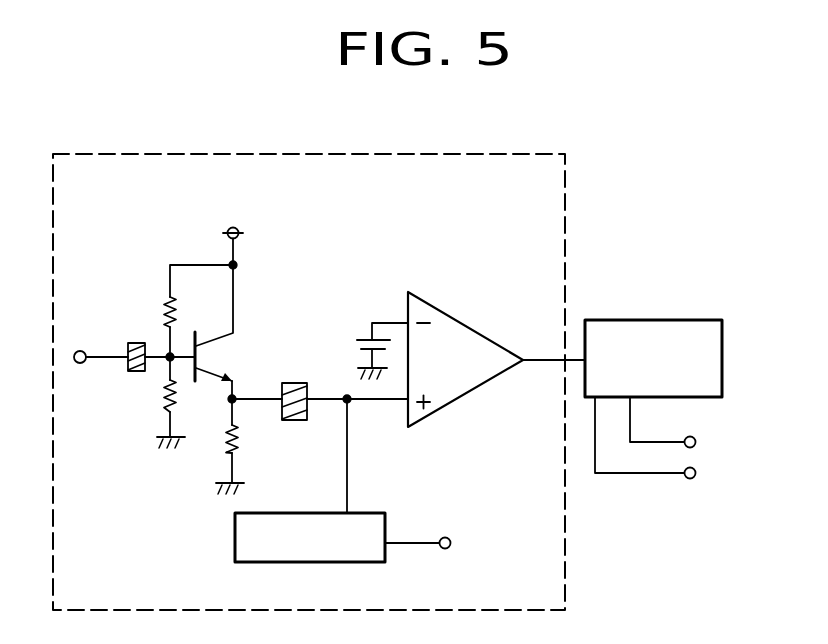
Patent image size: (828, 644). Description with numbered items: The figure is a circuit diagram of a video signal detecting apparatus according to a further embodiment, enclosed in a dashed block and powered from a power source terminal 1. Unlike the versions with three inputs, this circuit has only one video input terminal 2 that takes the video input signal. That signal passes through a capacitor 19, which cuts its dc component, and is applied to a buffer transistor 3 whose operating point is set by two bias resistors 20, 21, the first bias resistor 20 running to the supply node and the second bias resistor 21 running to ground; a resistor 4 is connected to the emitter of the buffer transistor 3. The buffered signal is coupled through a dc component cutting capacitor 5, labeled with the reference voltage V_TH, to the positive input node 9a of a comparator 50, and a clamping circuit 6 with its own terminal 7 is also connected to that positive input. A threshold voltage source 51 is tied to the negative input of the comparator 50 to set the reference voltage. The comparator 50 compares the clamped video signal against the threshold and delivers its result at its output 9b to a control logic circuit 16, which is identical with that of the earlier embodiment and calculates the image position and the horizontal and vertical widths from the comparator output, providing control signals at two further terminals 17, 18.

The power source terminal 1 is at (240, 228).
The video input terminal 2 is at (80, 347).
The buffer transistor 3 is at (210, 352).
The resistor 4 is at (224, 441).
The dc component cutting capacitor 5 is at (292, 385).
The clamping circuit 6 is at (324, 511).
The clamping control terminal 7 is at (450, 538).
The comparator input node 9a is at (378, 401).
The comparator output 9b is at (538, 361).
The control logic circuit 16 is at (669, 316).
The output terminal 17 is at (696, 442).
The output terminal 18 is at (696, 473).
The capacitor 19 is at (137, 342).
The bias resistor 20 is at (178, 316).
The bias resistor 21 is at (162, 402).
The comparator 50 is at (470, 327).
The threshold voltage source 51 is at (358, 338).